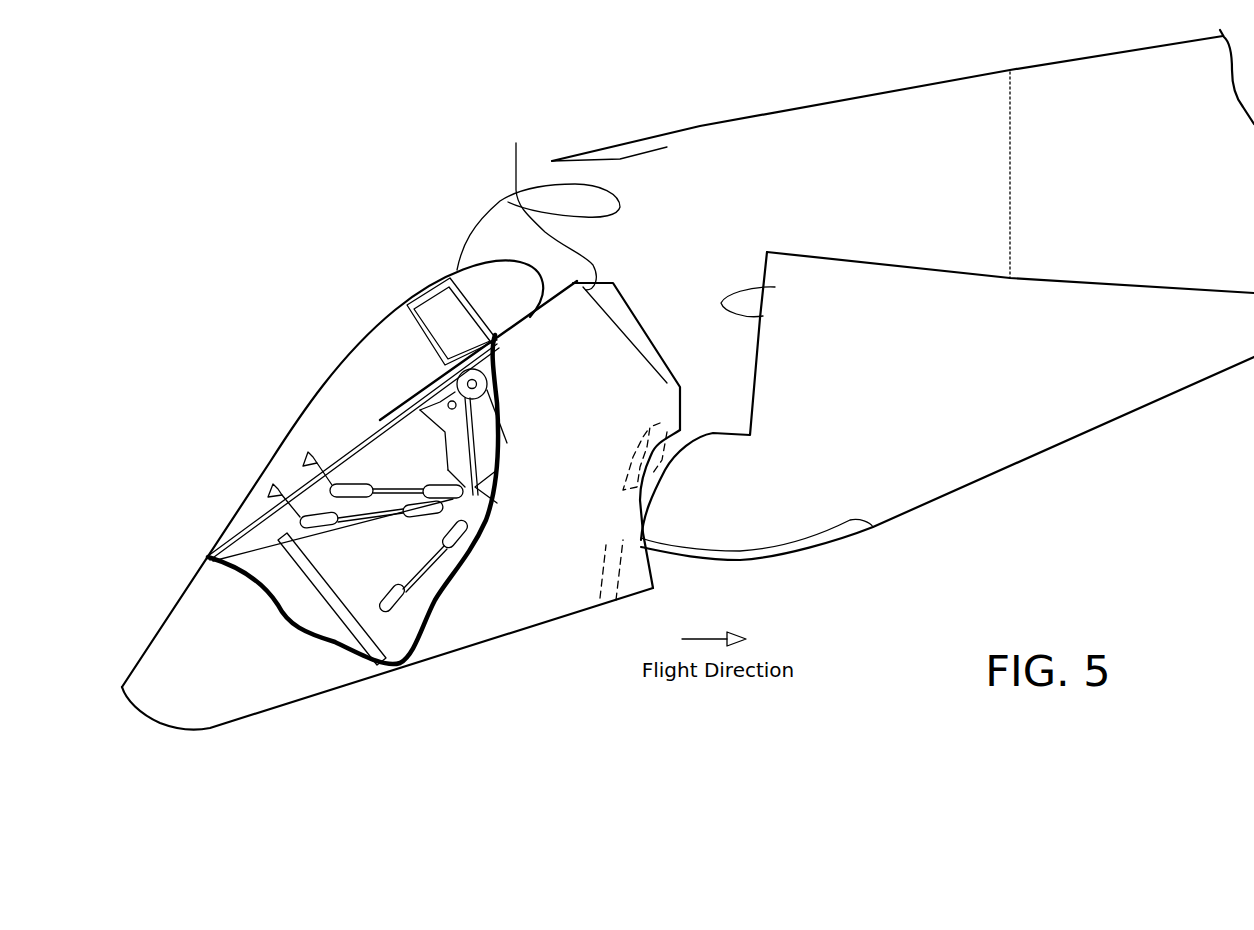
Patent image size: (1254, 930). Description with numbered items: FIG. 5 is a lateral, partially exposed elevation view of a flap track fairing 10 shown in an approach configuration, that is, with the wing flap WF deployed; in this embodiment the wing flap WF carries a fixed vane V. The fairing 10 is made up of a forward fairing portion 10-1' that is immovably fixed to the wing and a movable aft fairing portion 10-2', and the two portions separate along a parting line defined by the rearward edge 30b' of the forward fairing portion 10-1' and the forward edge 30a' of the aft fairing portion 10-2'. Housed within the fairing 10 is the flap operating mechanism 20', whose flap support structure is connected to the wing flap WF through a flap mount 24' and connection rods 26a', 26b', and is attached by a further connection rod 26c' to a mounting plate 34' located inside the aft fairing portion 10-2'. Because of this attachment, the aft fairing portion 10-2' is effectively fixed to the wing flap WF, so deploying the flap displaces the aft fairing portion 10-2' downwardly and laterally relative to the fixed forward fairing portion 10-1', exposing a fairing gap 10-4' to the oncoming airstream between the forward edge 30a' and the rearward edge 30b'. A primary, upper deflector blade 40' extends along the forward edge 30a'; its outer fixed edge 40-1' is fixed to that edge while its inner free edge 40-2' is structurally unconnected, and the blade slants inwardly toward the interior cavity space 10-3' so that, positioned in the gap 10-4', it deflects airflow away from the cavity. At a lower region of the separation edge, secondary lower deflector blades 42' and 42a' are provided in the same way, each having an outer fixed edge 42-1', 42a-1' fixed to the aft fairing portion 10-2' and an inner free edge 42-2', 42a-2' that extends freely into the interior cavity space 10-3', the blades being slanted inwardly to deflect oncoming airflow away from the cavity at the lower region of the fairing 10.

The flap track fairing system 10 is at (393, 700).
The forward fairing portion 10-1' is at (947, 406).
The aft fairing portion 10-2' is at (614, 498).
The interior cavity space 10-3' is at (353, 499).
The fairing gap 10-4' is at (903, 154).
The flap operating mechanism 20' is at (411, 401).
The flap mount 24' is at (440, 311).
The connection rod 26a' is at (356, 406).
The connection rod 26b' is at (326, 464).
The connection rod 26c' is at (444, 625).
The forward edge of the aft fairing portion 30a' is at (692, 359).
The rearward edge of the forward fairing portion 30b' is at (830, 310).
The mounting plate 34' is at (315, 603).
The primary deflector blade 40' is at (630, 354).
The outer fixed edge 40-1' is at (543, 203).
The inner free edge 40-2' is at (658, 256).
The secondary deflector blade 42' is at (572, 562).
The outer fixed edge 42-1' is at (588, 606).
The inner free edge 42-2' is at (680, 583).
The secondary deflector blade 42a' is at (599, 457).
The outer fixed edge 42a-1' is at (587, 396).
The inner free edge 42a-2' is at (722, 456).
The fixed vane V is at (458, 367).
The wing flap WF is at (362, 383).